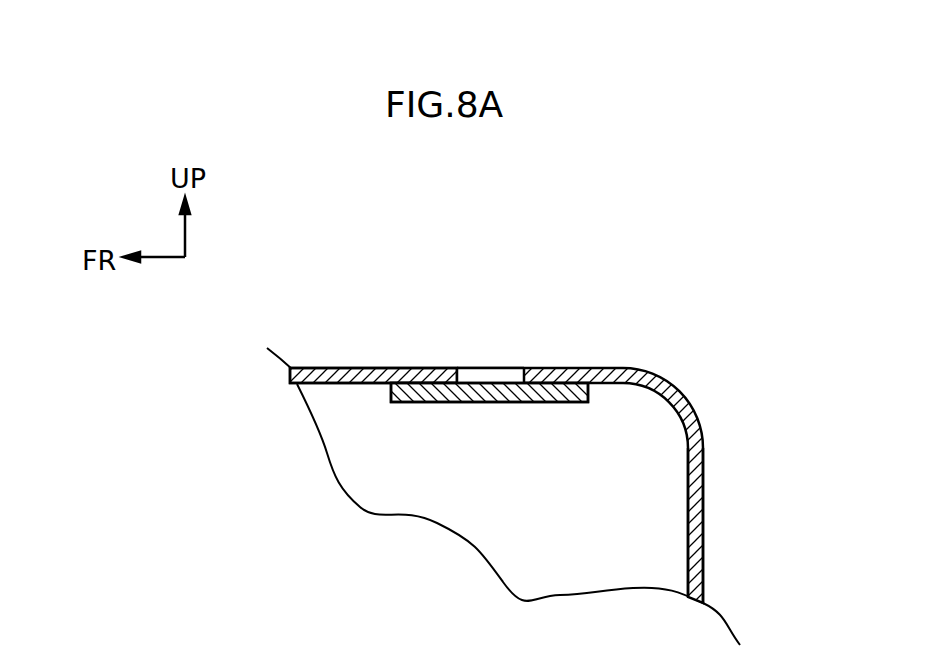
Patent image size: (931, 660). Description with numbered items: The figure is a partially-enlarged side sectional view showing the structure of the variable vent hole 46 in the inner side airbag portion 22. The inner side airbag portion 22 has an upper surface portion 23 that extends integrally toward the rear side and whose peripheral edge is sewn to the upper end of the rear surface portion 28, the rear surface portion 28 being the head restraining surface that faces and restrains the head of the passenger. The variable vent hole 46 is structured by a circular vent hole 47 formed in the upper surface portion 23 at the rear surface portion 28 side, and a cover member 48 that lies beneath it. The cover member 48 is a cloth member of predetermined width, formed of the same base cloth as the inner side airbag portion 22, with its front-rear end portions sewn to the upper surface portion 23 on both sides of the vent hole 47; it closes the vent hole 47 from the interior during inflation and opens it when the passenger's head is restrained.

The inner side airbag portion 22 is at (603, 360).
The upper surface portion 23 is at (343, 367).
The rear surface portion 28 is at (703, 505).
The variable vent hole 46 is at (392, 417).
The vent hole 47 is at (514, 367).
The cover member 48 is at (493, 402).